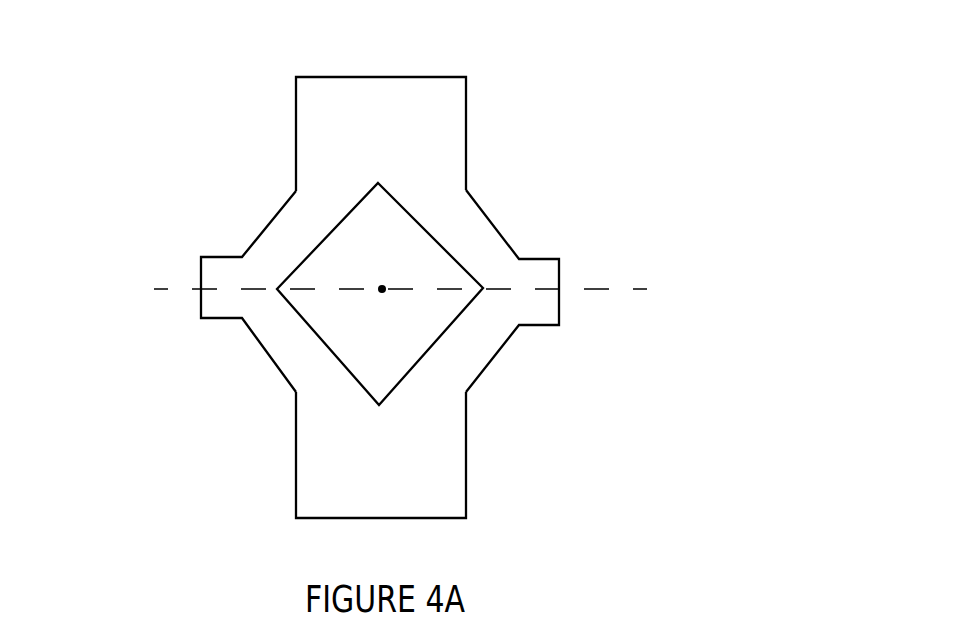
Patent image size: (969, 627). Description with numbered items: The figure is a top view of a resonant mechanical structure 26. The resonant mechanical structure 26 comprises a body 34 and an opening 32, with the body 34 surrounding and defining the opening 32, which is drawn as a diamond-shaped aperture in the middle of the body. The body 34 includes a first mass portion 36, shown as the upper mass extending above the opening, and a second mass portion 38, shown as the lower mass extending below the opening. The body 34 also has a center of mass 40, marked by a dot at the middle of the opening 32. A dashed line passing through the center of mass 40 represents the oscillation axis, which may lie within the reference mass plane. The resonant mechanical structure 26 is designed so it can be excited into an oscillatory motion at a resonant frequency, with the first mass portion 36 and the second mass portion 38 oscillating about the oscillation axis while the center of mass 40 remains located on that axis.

The resonant mechanical structure 26 is at (168, 99).
The opening 32 is at (412, 217).
The body 34 is at (292, 237).
The first mass portion 36 is at (380, 100).
The second mass portion 38 is at (373, 478).
The center of mass 40 is at (385, 292).